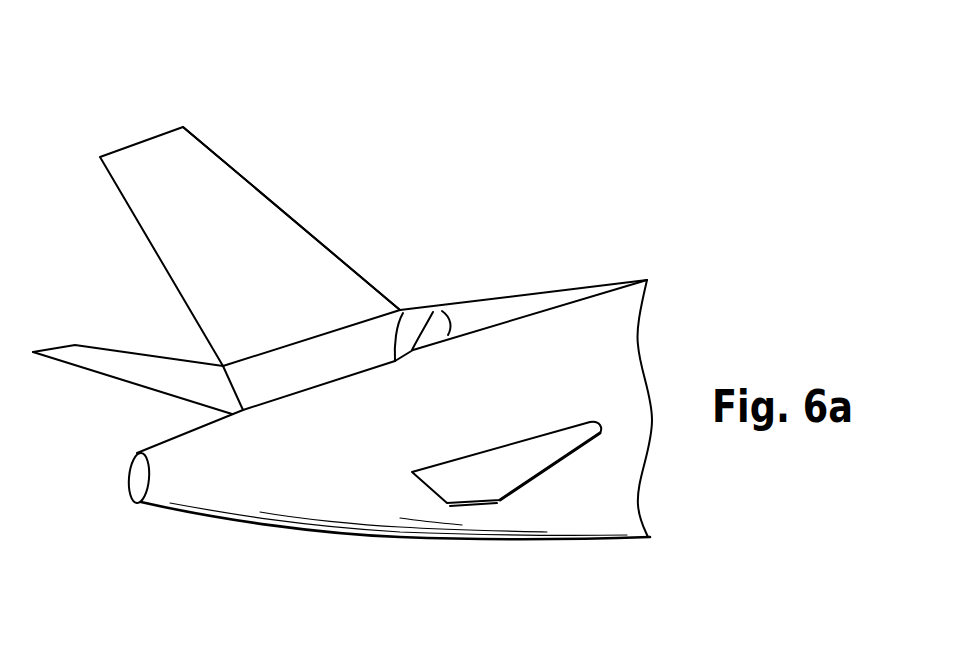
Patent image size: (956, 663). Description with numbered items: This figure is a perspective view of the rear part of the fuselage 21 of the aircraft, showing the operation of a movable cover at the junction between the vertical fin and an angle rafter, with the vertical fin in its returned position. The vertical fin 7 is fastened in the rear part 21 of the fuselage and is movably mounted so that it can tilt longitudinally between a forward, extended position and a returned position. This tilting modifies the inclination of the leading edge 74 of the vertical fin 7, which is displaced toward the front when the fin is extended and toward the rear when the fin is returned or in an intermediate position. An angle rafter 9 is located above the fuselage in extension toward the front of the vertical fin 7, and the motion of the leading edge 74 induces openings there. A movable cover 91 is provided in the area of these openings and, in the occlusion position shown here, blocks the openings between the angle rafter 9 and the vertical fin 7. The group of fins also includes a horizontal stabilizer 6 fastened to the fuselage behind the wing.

The vertical fin 7 is at (241, 118).
The leading edge 74 is at (293, 218).
The movable cover 91 is at (420, 325).
The angle rafter 9 is at (518, 266).
The horizontal stabilizer 6 is at (512, 468).
The rear part of the fuselage 21 is at (595, 508).